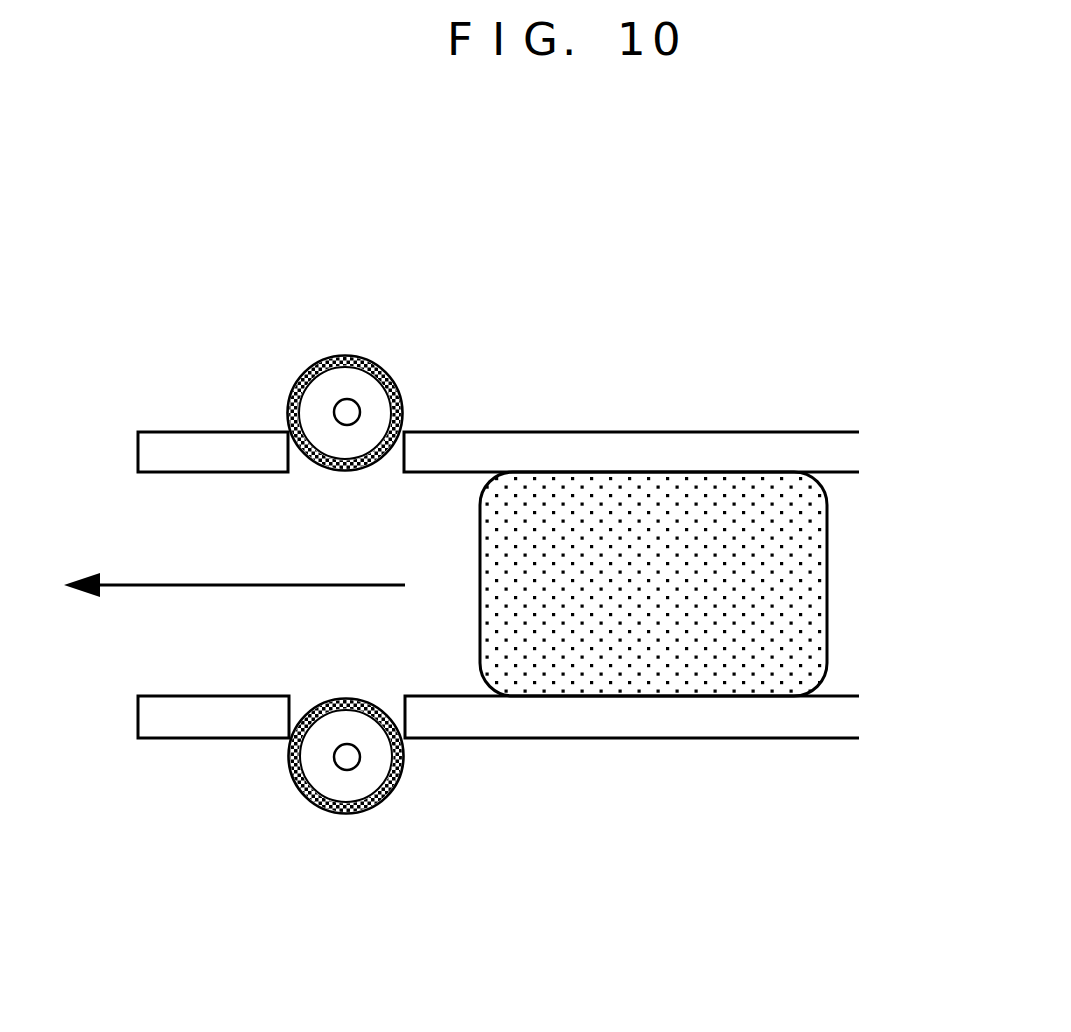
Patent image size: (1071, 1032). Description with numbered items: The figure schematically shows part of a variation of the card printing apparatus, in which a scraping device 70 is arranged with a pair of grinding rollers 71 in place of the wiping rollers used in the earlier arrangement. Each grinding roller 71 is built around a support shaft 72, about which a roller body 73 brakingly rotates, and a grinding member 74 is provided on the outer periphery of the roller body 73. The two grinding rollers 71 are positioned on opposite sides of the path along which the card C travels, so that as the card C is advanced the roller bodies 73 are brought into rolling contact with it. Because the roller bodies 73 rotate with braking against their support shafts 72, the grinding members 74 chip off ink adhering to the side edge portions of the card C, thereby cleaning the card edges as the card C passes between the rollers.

The scraping device 70 is at (376, 268).
The grinding roller 71 is at (397, 352).
The support shaft 72 is at (349, 411).
The roller body 73 is at (337, 437).
The grinding member 74 is at (403, 415).
The card C is at (827, 580).